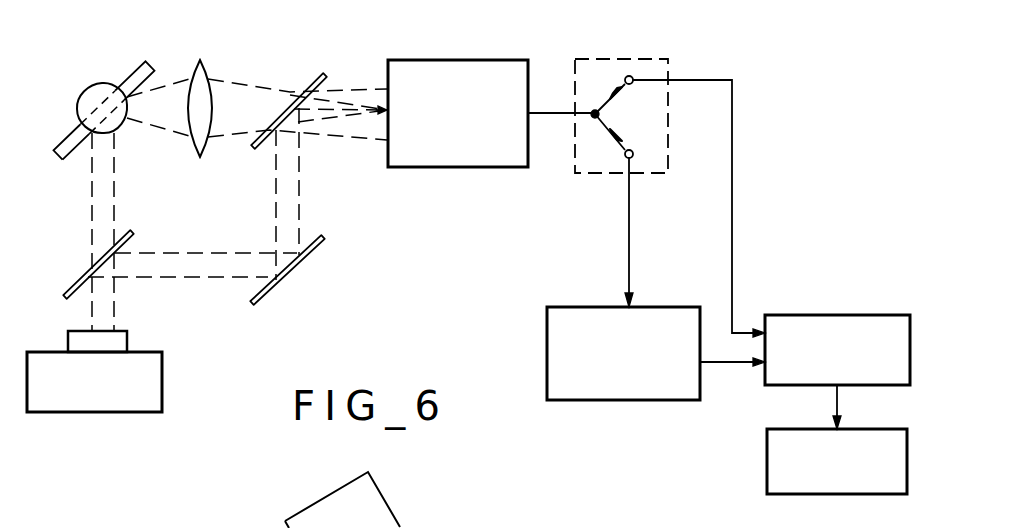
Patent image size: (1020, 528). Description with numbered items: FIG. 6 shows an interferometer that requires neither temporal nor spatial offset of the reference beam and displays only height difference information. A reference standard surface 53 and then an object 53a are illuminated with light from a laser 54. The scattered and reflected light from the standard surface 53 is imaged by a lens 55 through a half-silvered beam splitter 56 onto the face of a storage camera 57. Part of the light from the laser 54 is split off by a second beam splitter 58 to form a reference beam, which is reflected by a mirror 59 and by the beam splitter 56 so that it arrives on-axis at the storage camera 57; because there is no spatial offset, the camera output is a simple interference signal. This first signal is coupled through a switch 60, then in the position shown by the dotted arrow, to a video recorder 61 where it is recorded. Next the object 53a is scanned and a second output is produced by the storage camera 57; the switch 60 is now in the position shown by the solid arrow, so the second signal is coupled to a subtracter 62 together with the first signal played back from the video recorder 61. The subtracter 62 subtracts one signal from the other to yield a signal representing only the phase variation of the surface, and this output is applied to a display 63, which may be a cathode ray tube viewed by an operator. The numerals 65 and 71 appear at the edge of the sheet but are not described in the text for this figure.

The reference standard surface 53 is at (143, 49).
The object 53a is at (86, 89).
The laser 54 is at (162, 384).
The lens 55 is at (201, 62).
The beam splitter 56 is at (322, 74).
The storage camera 57 is at (478, 61).
The beam splitter 58 is at (76, 282).
The mirror 59 is at (264, 298).
The switch 60 is at (630, 58).
The video recorder 61 is at (547, 327).
The subtracter 62 is at (848, 313).
The display 63 is at (817, 494).
The element 65 is at (226, 522).
The element 71 is at (400, 522).